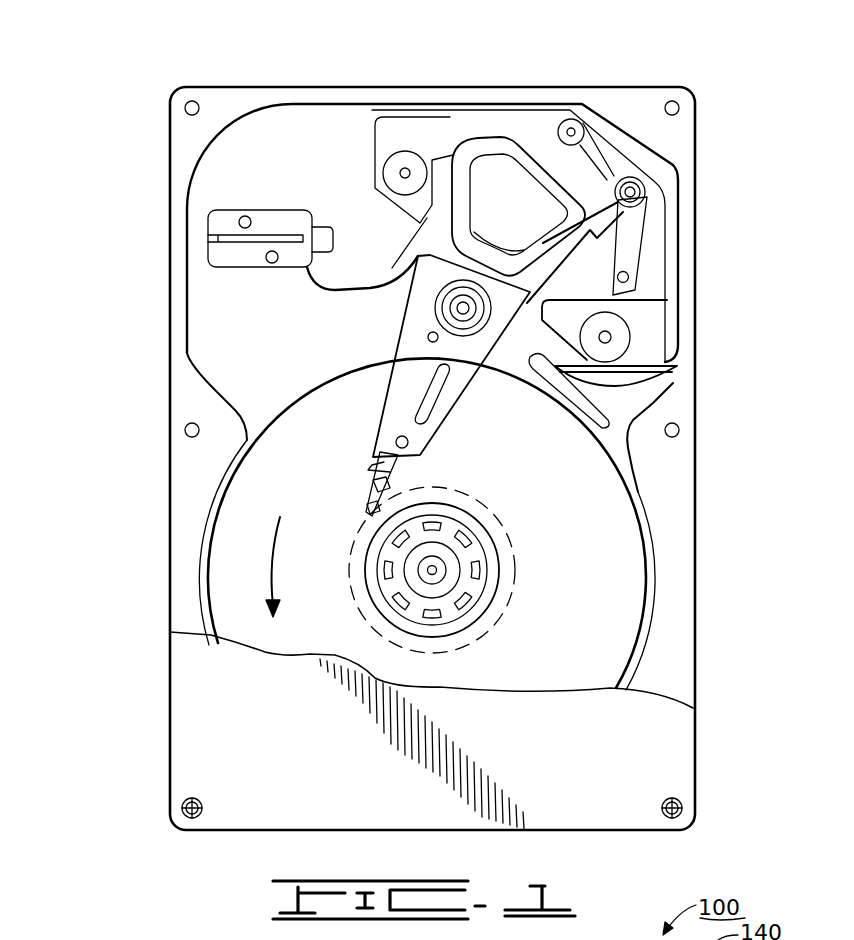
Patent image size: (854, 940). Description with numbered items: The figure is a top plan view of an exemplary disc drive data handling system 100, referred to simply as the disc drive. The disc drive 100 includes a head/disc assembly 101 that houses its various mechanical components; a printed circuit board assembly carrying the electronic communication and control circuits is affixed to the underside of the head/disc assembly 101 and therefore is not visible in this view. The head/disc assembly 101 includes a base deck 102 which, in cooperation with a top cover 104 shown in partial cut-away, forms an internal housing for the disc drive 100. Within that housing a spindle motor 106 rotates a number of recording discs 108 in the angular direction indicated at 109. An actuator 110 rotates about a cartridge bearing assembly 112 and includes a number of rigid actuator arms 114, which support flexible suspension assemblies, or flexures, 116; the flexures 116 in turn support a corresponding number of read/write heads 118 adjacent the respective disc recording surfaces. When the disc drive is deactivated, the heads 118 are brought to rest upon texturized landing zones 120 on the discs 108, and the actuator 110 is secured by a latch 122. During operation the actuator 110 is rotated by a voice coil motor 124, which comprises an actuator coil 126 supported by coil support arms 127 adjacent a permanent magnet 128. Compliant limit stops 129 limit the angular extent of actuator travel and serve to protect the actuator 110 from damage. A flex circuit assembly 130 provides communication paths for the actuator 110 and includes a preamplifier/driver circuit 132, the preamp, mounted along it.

The disc drive data handling system 100 is at (180, 62).
The head/disc assembly 101 is at (248, 161).
The base deck 102 is at (213, 322).
The top cover 104 is at (212, 713).
The spindle motor 106 is at (463, 557).
The recording discs 108 is at (630, 583).
The angular direction 109 is at (270, 562).
The actuator 110 is at (445, 362).
The cartridge bearing assembly 112 is at (477, 308).
The rigid actuator arms 114 is at (430, 420).
The flexible suspension assemblies 116 is at (373, 477).
The read/write heads 118 is at (362, 507).
The texturized landing zones 120 is at (500, 626).
The latch 122 is at (633, 237).
The voice coil motor 124 is at (513, 115).
The actuator coil 126 is at (478, 147).
The coil support arms 127 is at (438, 162).
The permanent magnet 128 is at (600, 292).
The compliant limit stops 129 is at (400, 168).
The flex circuit assembly 130 is at (321, 300).
The preamplifier/driver circuit 132 is at (380, 318).